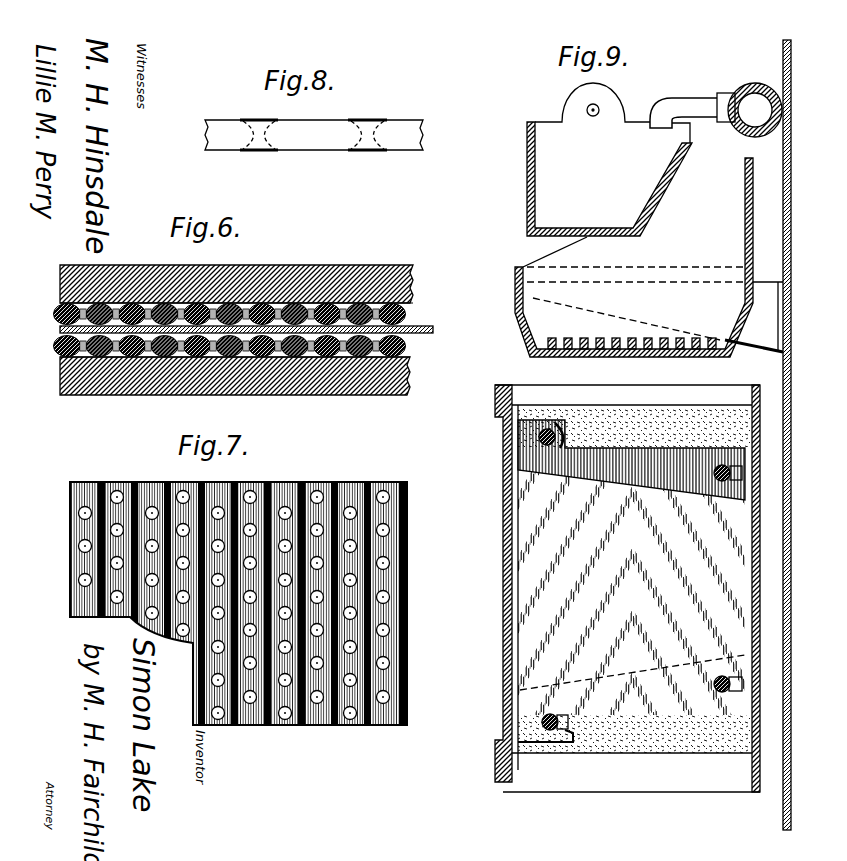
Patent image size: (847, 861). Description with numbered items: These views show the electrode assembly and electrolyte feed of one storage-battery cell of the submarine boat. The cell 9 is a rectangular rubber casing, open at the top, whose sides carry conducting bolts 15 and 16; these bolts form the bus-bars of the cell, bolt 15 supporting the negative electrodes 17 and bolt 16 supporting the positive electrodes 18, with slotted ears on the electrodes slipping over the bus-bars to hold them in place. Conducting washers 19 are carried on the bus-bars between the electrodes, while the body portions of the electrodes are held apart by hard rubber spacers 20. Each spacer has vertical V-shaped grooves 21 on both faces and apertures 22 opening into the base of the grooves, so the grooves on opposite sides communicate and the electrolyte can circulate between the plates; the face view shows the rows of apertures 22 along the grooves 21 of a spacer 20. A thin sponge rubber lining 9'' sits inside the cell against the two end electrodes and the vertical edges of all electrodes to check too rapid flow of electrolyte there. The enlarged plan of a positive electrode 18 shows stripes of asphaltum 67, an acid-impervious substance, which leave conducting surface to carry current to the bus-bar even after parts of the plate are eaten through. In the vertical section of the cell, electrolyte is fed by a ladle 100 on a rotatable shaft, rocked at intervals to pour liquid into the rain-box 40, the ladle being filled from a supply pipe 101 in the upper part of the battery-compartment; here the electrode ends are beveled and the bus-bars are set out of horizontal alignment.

In FIG. 9, the cell 9 is at (654, 588).
In FIG. 9, the sponge rubber lining 9'' is at (634, 580).
In FIG. 9, the bolt 15 is at (535, 438).
In FIG. 9, the bolt 16 is at (541, 723).
In FIG. 6, the negative electrode 17 is at (366, 290).
In FIG. 9, the negative electrode 17 is at (560, 462).
In FIG. 8, the positive electrode 18 is at (312, 147).
In FIG. 6, the positive electrode 18 is at (433, 329).
In FIG. 9, the positive electrode 18 is at (631, 592).
In FIG. 9, the washer 19 is at (741, 682).
In FIG. 6, the spacer 20 is at (413, 313).
In FIG. 7, the spacer 20 is at (238, 591).
In FIG. 6, the V-shaped groove 21 is at (125, 300).
In FIG. 7, the V-shaped groove 21 is at (130, 438).
In FIG. 6, the aperture 22 is at (217, 313).
In FIG. 7, the aperture 22 is at (110, 565).
In FIG. 9, the rain-box 40 is at (649, 257).
In FIG. 8, the asphaltum stripe 67 is at (365, 117).
In FIG. 9, the asphaltum stripe 67 is at (533, 598).
In FIG. 9, the ladle 100 is at (609, 159).
In FIG. 9, the supply pipe 101 is at (743, 88).